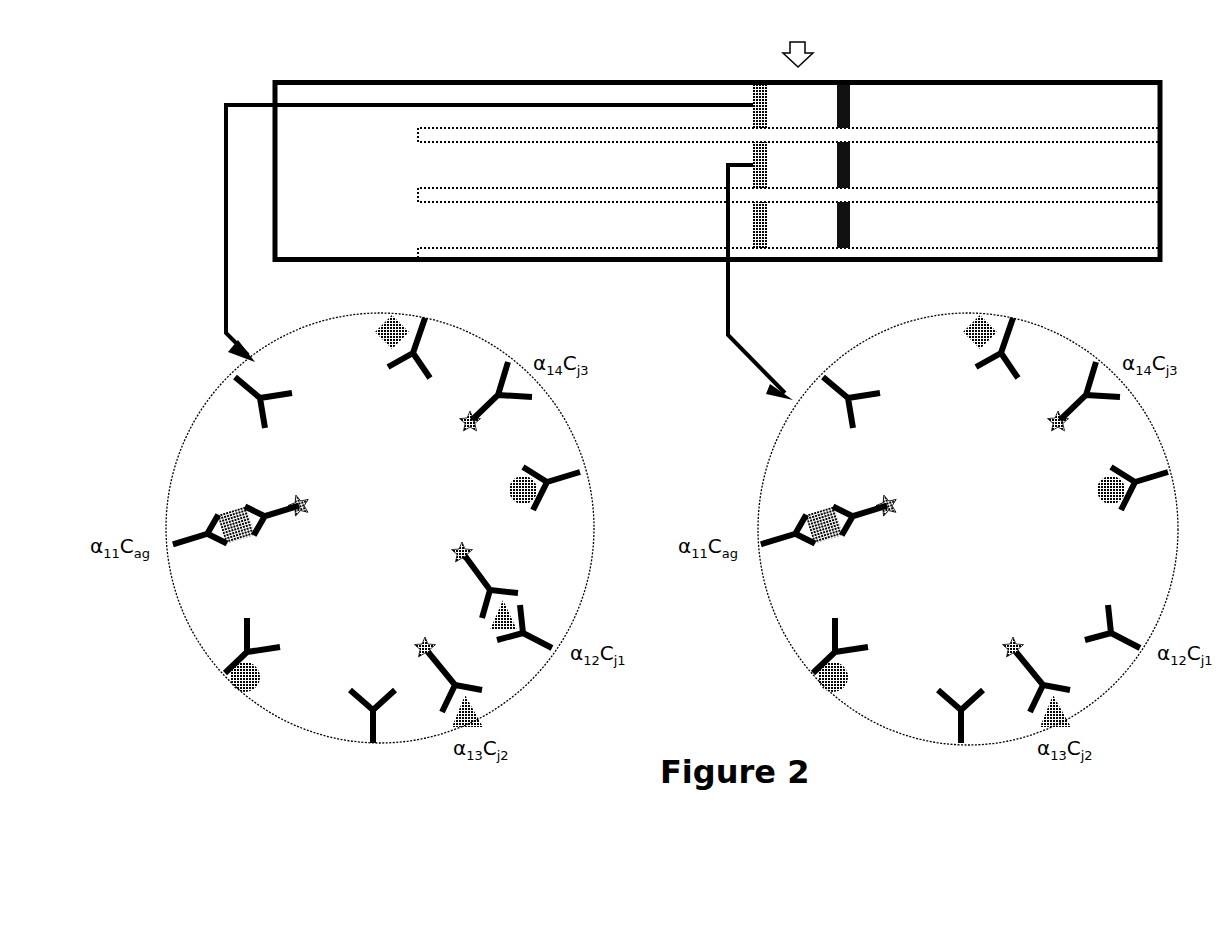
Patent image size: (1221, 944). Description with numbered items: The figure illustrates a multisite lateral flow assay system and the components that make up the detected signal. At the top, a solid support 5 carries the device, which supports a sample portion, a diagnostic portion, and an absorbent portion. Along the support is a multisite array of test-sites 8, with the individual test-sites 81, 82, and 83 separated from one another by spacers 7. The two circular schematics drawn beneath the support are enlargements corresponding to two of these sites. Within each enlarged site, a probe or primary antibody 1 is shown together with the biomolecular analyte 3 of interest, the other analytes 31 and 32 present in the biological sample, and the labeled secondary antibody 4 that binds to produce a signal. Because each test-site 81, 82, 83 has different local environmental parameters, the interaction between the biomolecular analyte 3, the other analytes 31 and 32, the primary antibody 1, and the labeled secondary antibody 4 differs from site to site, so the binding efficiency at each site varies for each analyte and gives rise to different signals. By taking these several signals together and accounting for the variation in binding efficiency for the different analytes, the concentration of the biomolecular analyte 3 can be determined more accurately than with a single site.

The primary antibody 1 is at (255, 407).
The biomolecular analyte 3 is at (218, 543).
The labeled secondary antibody 4 is at (853, 508).
The solid support 5 is at (270, 87).
The spacer 7 is at (1075, 132).
The multisite array of test-sites 8 is at (797, 38).
The test-site 81 is at (755, 88).
The test-site 82 is at (753, 150).
The test-site 83 is at (760, 227).
The other analyte 31 is at (250, 693).
The other analyte 32 is at (477, 710).